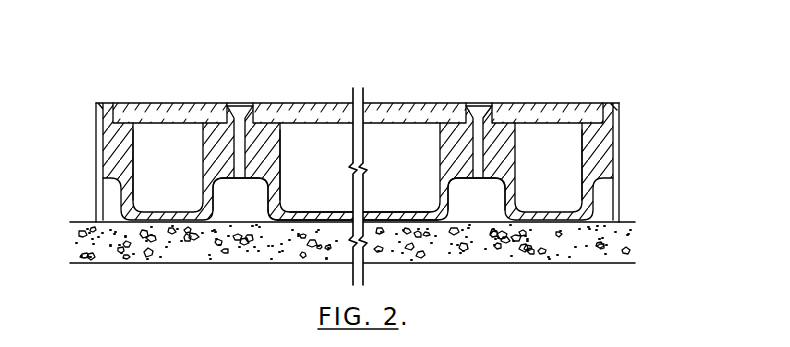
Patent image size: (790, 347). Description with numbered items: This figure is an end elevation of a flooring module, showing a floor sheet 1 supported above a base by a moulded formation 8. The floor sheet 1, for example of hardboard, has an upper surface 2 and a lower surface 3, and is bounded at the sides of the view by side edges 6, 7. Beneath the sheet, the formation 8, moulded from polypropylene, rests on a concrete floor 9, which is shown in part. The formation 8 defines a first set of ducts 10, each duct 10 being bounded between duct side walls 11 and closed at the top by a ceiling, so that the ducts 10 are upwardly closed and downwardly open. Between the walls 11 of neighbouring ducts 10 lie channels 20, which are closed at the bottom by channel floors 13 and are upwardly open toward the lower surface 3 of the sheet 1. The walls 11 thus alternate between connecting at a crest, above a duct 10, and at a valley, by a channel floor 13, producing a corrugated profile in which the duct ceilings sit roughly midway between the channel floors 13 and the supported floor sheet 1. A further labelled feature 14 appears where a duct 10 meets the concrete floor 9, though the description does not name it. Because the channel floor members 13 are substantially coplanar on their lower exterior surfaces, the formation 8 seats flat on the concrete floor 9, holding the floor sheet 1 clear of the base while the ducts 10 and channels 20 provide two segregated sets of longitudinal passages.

The floor sheet 1 is at (166, 106).
The upper surface 2 is at (410, 103).
The lower surface 3 is at (327, 121).
The side edge 6 is at (96, 117).
The side edge 7 is at (622, 138).
The formation 8 is at (541, 148).
The concrete floor 9 is at (535, 252).
The duct 10 is at (483, 210).
The duct side wall 11 is at (293, 188).
The channel floor 13 is at (395, 213).
The foot 14 is at (257, 222).
The channel 20 is at (632, 187).